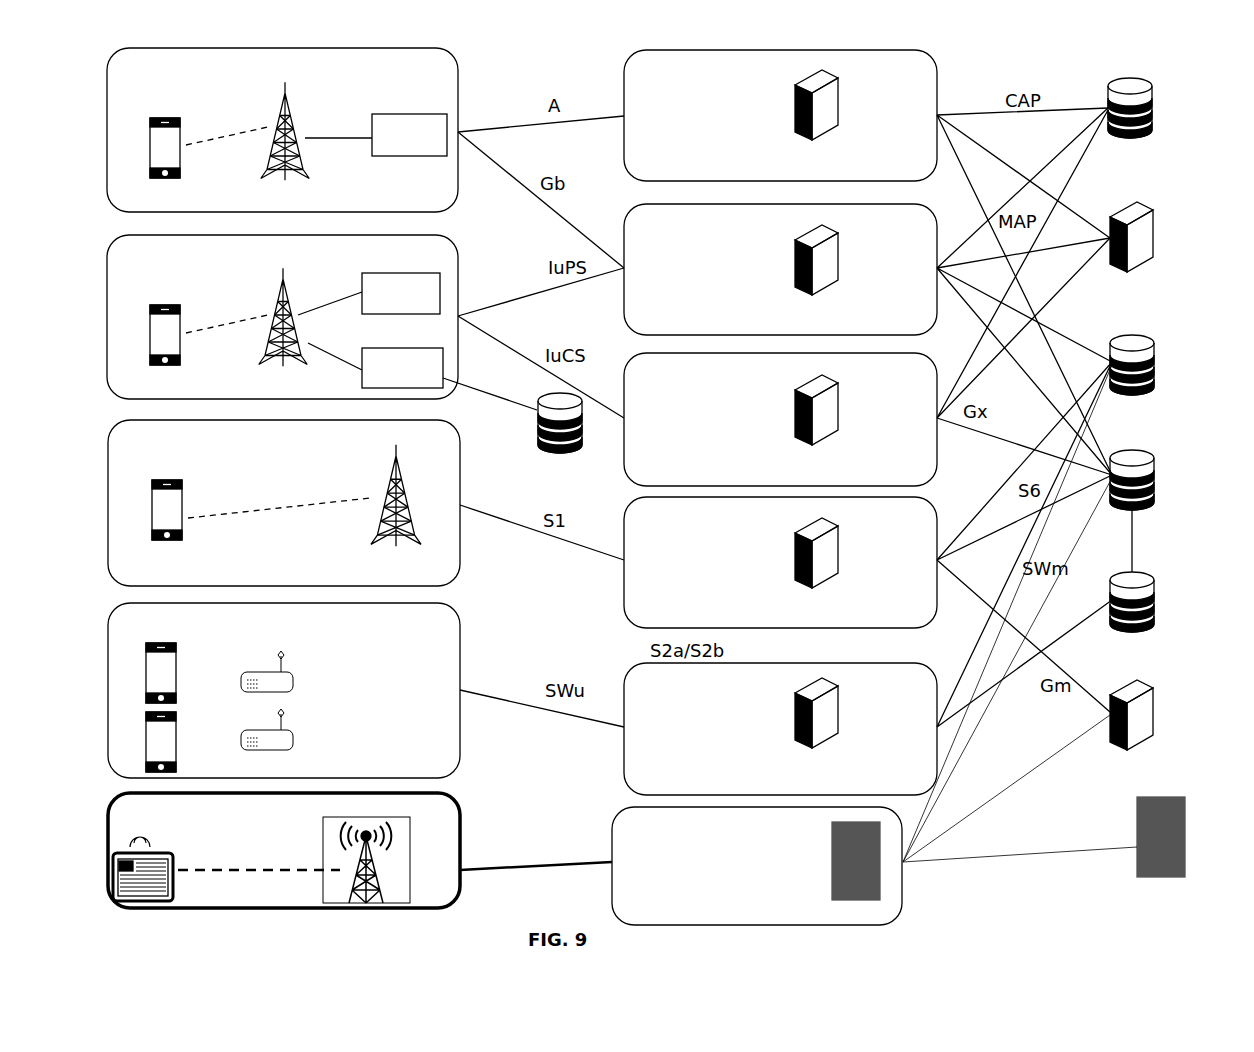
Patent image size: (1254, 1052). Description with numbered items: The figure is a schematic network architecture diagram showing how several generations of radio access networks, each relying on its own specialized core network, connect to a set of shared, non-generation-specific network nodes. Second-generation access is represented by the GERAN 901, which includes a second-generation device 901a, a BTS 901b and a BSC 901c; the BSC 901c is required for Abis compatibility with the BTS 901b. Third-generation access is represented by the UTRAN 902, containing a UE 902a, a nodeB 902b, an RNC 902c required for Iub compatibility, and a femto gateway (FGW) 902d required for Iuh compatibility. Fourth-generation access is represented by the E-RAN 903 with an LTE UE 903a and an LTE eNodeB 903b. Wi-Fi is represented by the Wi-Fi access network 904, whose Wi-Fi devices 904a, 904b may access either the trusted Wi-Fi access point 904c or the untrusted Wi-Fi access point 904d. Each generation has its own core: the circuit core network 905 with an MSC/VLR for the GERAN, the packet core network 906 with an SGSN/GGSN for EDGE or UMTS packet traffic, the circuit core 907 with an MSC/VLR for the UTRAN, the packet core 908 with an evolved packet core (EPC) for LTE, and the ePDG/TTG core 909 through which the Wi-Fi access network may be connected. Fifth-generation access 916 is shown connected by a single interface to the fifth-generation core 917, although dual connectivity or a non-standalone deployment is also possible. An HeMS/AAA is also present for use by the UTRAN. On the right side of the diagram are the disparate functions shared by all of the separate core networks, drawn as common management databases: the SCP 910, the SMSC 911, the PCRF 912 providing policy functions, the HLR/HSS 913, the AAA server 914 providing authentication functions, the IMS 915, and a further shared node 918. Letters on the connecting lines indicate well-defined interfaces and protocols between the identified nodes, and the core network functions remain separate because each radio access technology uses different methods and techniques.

The GERAN 901 is at (308, 129).
The 2G device 901a is at (168, 120).
The BTS 901b is at (295, 120).
The BSC 901c is at (385, 114).
The UTRAN 902 is at (309, 316).
The 3G UE 902a is at (162, 307).
The nodeB 902b is at (276, 301).
The RNC 902c is at (370, 274).
The femto gateway 902d is at (372, 348).
The E-RAN 903 is at (306, 494).
The LTE UE 903a is at (165, 482).
The LTE eNodeB 903b is at (386, 492).
The Wi-Fi access network 904 is at (310, 690).
The Wi-Fi device 904a is at (178, 668).
The Wi-Fi device 904b is at (178, 733).
The trusted Wi-Fi access point 904c is at (291, 657).
The untrusted Wi-Fi access point 904d is at (295, 722).
The 2G circuit core network 905 is at (896, 51).
The 2G/3G packet core network 906 is at (900, 206).
The 3G circuit core 907 is at (900, 355).
The 4G circuit core 908 is at (920, 500).
The core network 909 is at (920, 664).
The service control point (SCP) 910 is at (1142, 76).
The short message service center (SMSC) 911 is at (1142, 200).
The policy and charging rules function (PCRF) 912 is at (1142, 333).
The HLR/HSS 913 is at (1142, 447).
The AAA server 914 is at (1142, 572).
The IMS 915 is at (1142, 678).
The 5G access 916 is at (462, 838).
The 5G core 917 is at (905, 898).
The network node 918 is at (1186, 822).